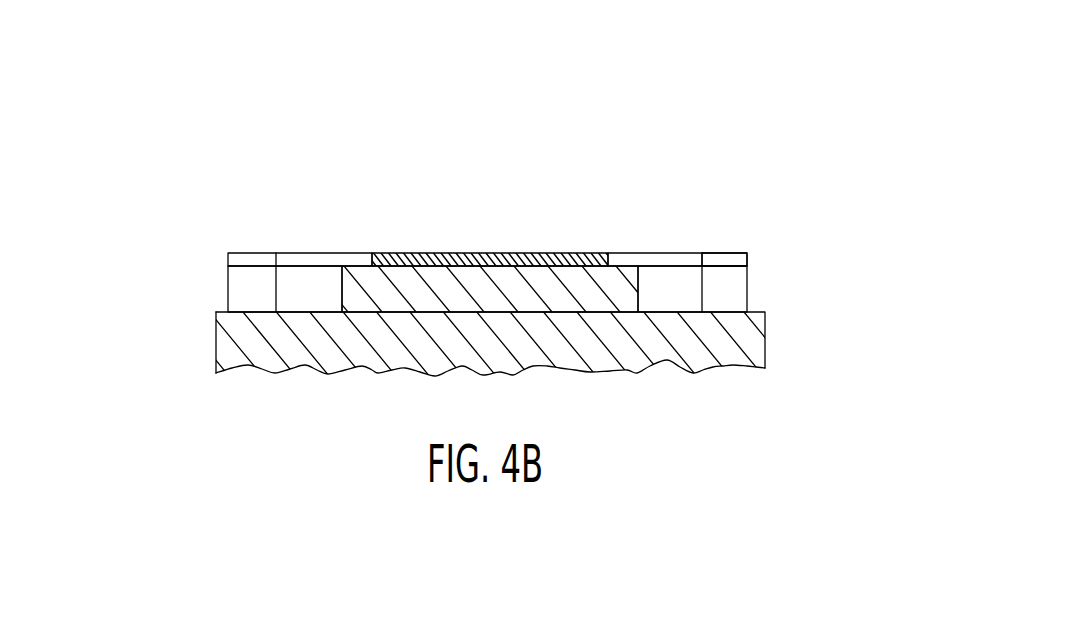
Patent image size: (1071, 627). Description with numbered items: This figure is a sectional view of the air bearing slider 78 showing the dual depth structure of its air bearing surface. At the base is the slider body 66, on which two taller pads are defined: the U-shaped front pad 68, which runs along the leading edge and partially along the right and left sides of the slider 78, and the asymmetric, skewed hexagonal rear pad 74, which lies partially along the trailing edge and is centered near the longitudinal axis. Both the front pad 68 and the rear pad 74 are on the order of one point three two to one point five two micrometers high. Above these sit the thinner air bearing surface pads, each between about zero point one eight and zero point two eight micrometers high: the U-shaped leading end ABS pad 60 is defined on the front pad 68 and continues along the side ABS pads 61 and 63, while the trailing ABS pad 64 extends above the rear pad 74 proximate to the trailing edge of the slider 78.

The leading end ABS pad 60 is at (360, 253).
The side ABS pad 61 is at (728, 253).
The side ABS pad 63 is at (245, 253).
The trailing ABS pad 64 is at (488, 253).
The slider body 66 is at (765, 328).
The front pad 68 is at (305, 282).
The rear pad 74 is at (417, 283).
The slider 78 is at (609, 133).